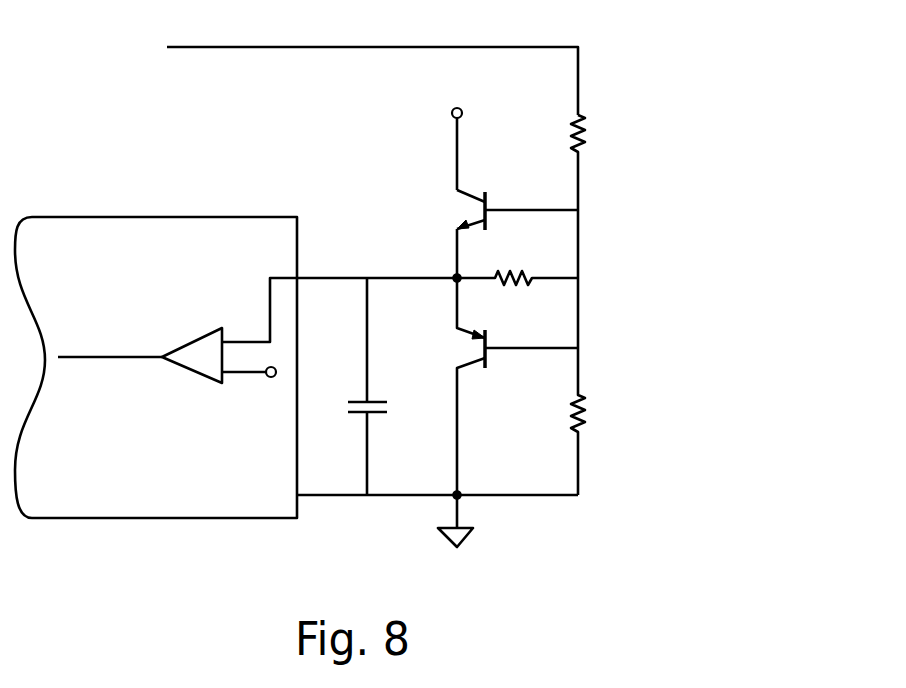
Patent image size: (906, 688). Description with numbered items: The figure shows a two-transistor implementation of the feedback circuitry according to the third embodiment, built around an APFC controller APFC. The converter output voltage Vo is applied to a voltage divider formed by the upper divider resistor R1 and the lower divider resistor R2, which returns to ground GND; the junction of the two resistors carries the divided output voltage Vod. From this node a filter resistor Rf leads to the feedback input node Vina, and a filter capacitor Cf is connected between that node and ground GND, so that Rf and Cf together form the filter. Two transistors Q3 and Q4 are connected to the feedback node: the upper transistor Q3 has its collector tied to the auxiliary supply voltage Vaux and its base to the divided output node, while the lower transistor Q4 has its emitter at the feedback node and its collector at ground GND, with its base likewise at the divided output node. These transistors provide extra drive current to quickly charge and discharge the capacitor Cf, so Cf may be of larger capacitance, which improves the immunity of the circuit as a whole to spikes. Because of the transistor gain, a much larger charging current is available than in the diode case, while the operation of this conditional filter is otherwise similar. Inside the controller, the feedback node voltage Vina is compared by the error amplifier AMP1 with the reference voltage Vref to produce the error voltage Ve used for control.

The APFC controller APFC is at (156, 367).
The error amplifier AMP1 is at (185, 373).
The error voltage Ve is at (110, 337).
The reference voltage Vref is at (250, 394).
The feedback input node Vina is at (341, 288).
The output voltage Vo is at (372, 60).
The upper divider resistor R1 is at (556, 162).
The auxiliary supply voltage Vaux is at (446, 127).
The transistor Q3 is at (495, 233).
The filter resistor Rf is at (517, 258).
The divided output voltage Vod is at (603, 279).
The transistor Q4 is at (494, 386).
The lower divider resistor R2 is at (556, 421).
The filter capacitor Cf is at (353, 386).
The ground GND is at (437, 520).